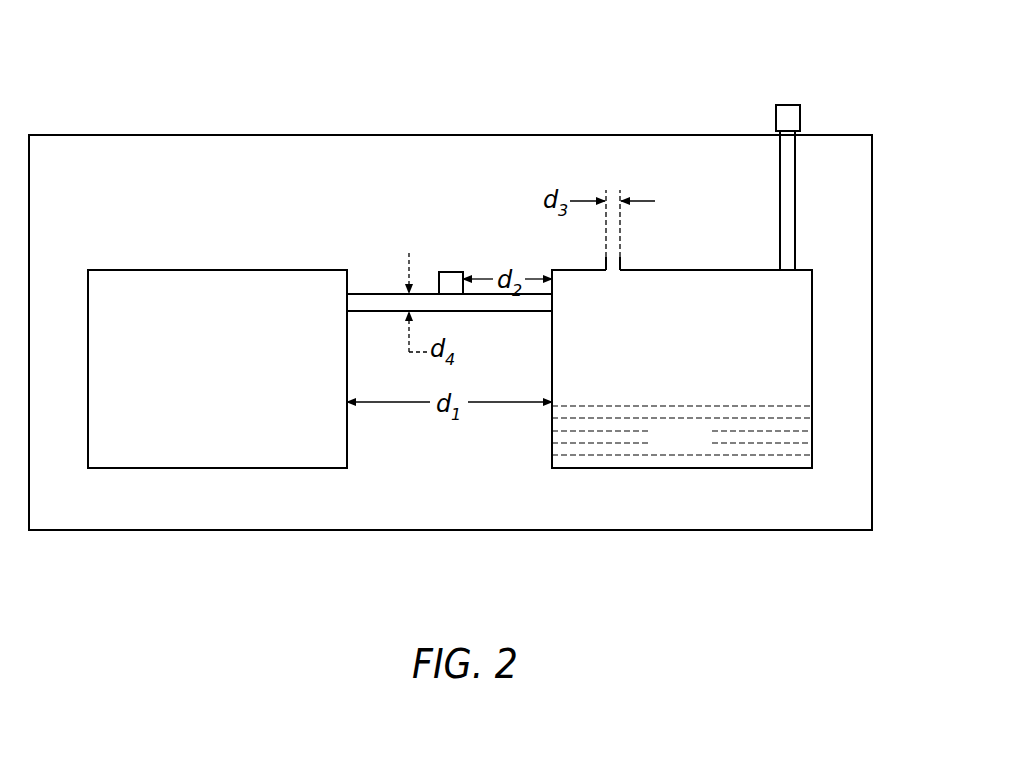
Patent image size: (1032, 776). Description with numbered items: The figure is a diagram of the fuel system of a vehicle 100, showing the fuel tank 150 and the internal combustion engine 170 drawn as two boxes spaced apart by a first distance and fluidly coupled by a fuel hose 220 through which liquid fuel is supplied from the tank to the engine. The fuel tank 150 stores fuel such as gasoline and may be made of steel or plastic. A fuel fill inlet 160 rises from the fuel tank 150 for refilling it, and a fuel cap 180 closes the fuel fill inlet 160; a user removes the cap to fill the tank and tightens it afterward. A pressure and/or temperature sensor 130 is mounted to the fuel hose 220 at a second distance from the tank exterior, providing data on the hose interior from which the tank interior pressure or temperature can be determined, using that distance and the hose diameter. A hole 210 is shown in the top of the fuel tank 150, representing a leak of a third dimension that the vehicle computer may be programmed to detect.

The vehicle 100 is at (92, 135).
The sensor 130 is at (455, 272).
The fuel tank 150 is at (812, 292).
The fuel fill inlet 160 is at (780, 133).
The internal combustion engine 170 is at (135, 270).
The fuel cap 180 is at (783, 105).
The hole 210 is at (626, 268).
The fuel hose 220 is at (383, 293).